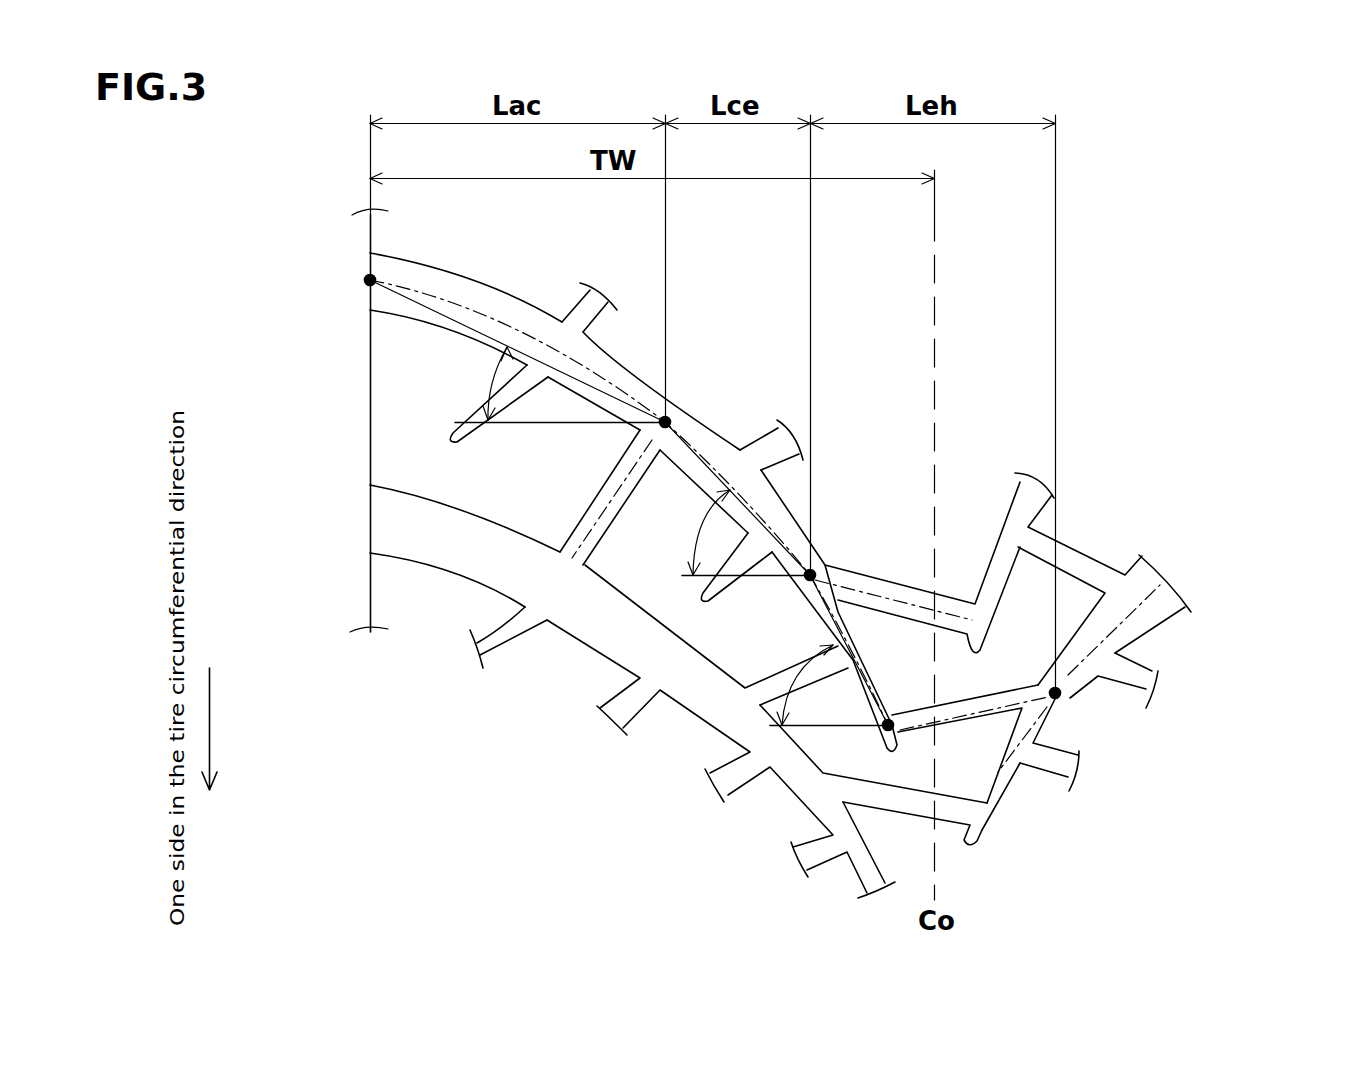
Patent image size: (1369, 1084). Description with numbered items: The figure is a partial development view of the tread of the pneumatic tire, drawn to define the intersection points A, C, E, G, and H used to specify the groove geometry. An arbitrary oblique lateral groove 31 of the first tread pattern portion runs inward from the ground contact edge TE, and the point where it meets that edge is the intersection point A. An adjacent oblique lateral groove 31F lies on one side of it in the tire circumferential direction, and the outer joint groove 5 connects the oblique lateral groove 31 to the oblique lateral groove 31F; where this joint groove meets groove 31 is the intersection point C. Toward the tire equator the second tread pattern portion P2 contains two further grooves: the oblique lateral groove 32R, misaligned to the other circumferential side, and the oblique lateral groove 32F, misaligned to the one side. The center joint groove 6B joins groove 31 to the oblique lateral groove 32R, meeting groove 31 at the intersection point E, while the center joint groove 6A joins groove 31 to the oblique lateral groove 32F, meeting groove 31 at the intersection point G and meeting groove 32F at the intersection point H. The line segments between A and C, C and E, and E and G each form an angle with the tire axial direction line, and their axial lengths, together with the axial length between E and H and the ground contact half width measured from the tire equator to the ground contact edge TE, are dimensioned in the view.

The oblique lateral groove 31 is at (402, 308).
The oblique lateral groove 31F is at (402, 527).
The oblique lateral groove 32R is at (1017, 522).
The oblique lateral groove 32F is at (1190, 600).
The outer joint groove 5 is at (605, 493).
The center joint groove 6A is at (963, 717).
The center joint groove 6B is at (890, 584).
The ground contact edge TE is at (368, 598).
The second tread pattern portion P2 is at (1122, 465).
The intersection point A is at (373, 278).
The intersection point C is at (668, 420).
The intersection point E is at (822, 567).
The intersection point G is at (885, 727).
The intersection point H is at (1070, 697).